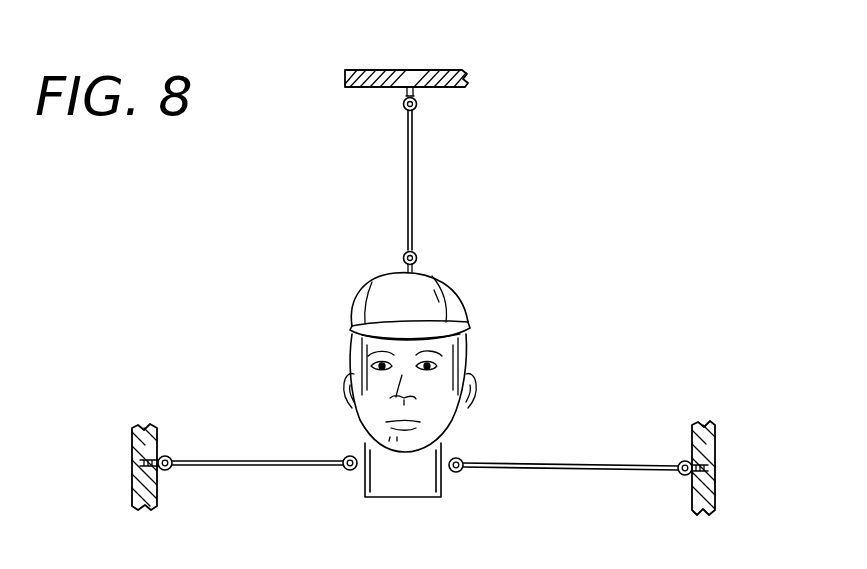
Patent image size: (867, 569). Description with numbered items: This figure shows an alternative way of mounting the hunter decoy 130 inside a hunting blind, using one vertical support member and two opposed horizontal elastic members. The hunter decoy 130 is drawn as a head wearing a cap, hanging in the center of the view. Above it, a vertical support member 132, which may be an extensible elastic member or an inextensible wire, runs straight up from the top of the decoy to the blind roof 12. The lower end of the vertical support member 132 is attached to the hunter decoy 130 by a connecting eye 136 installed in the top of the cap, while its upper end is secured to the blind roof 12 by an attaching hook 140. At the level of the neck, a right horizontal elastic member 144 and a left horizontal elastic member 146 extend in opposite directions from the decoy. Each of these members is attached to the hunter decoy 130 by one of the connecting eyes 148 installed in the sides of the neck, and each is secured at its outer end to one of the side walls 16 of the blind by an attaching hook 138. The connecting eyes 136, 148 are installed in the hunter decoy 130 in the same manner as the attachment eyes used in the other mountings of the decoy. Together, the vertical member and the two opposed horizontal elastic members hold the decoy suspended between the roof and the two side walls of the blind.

The blind roof 12 is at (376, 89).
The side walls 16 is at (156, 428).
The hunter decoy 130 is at (545, 283).
The vertical support member 132 is at (413, 175).
The connecting eye 136 is at (417, 254).
The attaching hooks 138 is at (170, 469).
The attaching hook 140 is at (420, 104).
The right horizontal elastic member 144 is at (280, 460).
The left horizontal elastic member 146 is at (518, 460).
The connecting eyes 148 is at (352, 470).